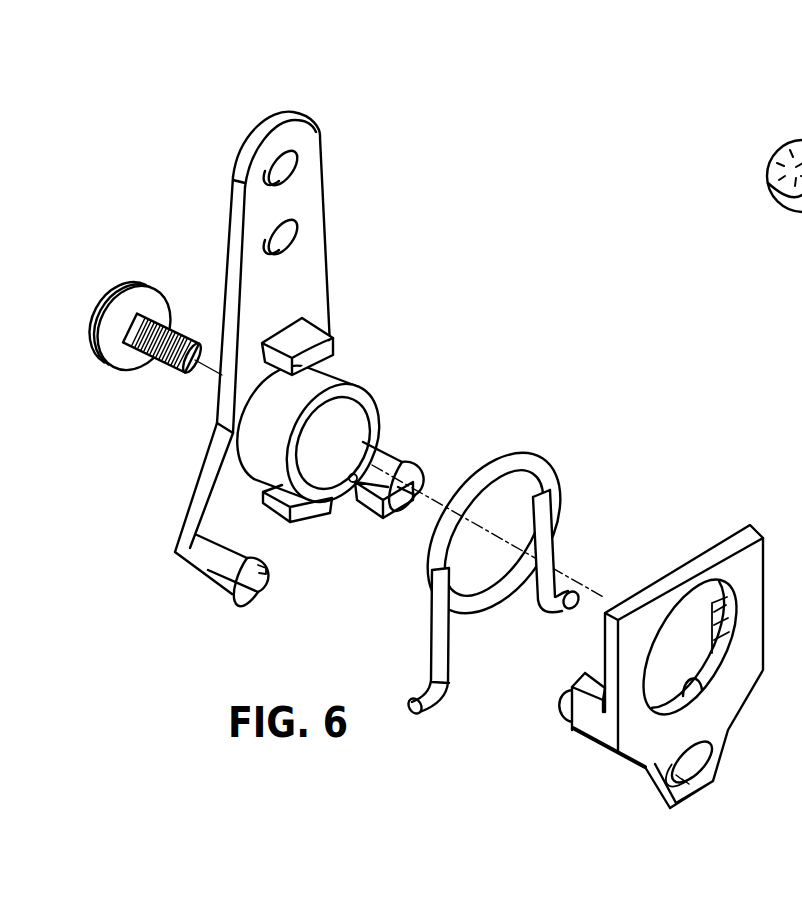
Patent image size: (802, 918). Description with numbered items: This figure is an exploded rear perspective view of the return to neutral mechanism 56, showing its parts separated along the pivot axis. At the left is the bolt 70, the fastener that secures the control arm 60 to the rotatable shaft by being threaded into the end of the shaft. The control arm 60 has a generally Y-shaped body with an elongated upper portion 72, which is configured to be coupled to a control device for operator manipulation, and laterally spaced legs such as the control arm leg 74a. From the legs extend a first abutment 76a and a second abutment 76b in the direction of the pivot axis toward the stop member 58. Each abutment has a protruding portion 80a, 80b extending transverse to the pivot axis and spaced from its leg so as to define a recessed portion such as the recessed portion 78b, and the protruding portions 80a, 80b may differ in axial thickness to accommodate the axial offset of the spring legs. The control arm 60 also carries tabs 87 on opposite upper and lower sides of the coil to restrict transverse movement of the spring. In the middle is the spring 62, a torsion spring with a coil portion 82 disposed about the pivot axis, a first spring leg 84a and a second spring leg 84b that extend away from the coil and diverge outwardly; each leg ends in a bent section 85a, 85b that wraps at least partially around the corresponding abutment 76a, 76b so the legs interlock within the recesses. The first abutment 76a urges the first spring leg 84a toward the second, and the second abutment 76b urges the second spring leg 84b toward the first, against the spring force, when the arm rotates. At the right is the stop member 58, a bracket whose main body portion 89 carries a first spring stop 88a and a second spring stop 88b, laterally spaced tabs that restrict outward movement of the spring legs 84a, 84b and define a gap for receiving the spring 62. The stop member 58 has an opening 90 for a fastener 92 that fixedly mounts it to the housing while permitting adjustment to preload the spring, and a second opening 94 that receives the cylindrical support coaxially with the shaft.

The return to neutral mechanism 56 is at (235, 125).
The stop member 58 is at (767, 530).
The control arm 60 is at (323, 125).
The spring 62 is at (567, 473).
The bolt 70 is at (178, 323).
The upper portion 72 is at (300, 188).
The control arm leg 74a is at (207, 484).
The first abutment 76a is at (212, 586).
The second abutment 76b is at (387, 457).
The recessed portion 78b is at (350, 482).
The protruding portion 80a is at (263, 588).
The protruding portion 80b is at (370, 512).
The coil portion 82 is at (503, 463).
The first spring leg 84a is at (433, 642).
The second spring leg 84b is at (547, 577).
The bent section 85a is at (437, 710).
The bent section 85b is at (560, 607).
The tabs 87 is at (303, 337).
The first spring stop 88a is at (595, 712).
The second spring stop 88b is at (705, 605).
The main body portion 89 is at (633, 732).
The opening 90 is at (720, 770).
The fastener 92 is at (562, 700).
The second opening 94 is at (685, 698).